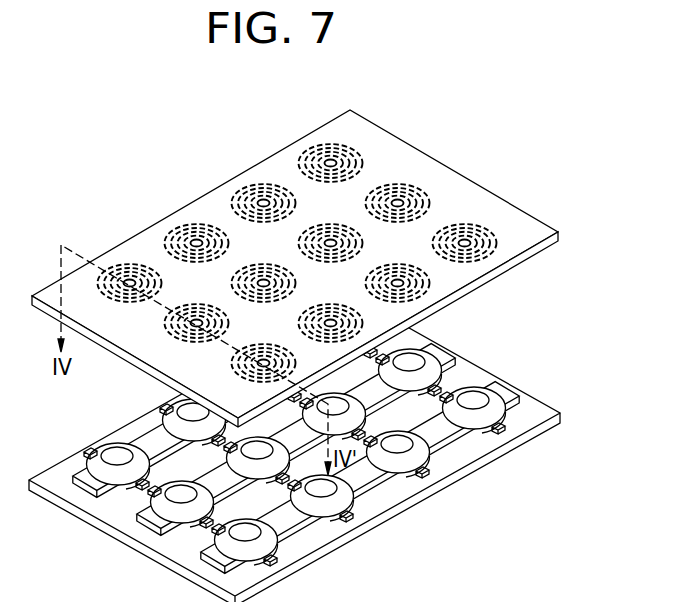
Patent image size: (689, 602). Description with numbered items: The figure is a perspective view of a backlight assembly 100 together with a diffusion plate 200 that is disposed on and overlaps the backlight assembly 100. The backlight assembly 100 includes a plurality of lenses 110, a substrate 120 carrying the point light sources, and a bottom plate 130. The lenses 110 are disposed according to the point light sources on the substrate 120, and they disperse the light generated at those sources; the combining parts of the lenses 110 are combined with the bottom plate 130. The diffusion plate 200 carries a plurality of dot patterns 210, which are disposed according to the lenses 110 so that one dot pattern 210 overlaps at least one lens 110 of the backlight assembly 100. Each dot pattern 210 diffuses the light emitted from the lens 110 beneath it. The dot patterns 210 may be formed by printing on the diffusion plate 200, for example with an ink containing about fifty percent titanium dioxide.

The backlight assembly 100 is at (344, 449).
The lens 110 is at (503, 409).
The substrate 120 is at (492, 379).
The bottom plate 130 is at (503, 441).
The diffusion plate 200 is at (400, 146).
The dot pattern 210 is at (481, 232).